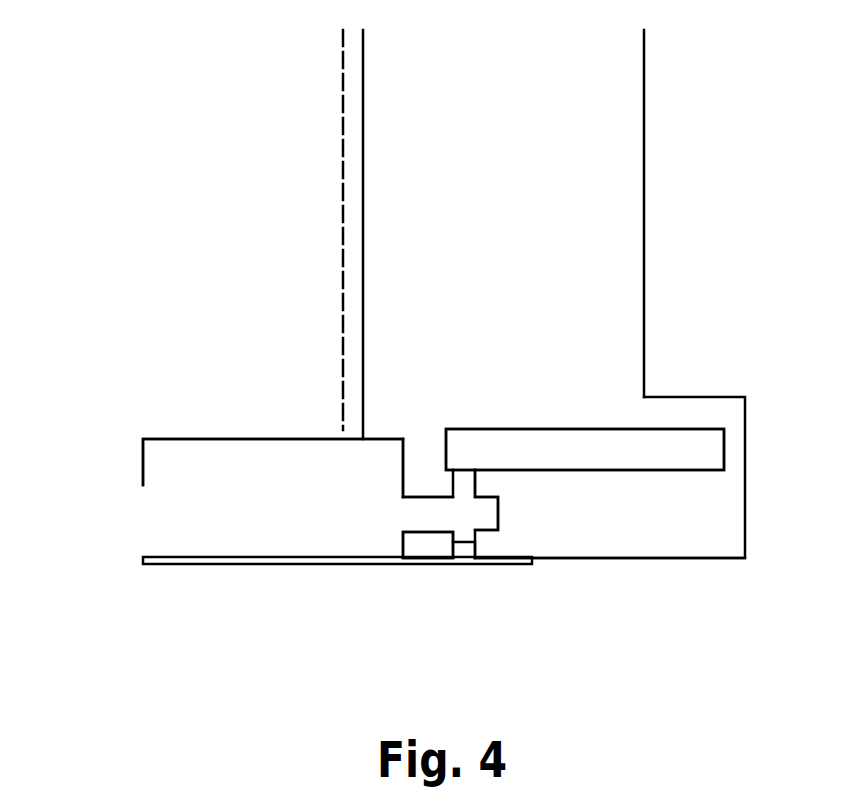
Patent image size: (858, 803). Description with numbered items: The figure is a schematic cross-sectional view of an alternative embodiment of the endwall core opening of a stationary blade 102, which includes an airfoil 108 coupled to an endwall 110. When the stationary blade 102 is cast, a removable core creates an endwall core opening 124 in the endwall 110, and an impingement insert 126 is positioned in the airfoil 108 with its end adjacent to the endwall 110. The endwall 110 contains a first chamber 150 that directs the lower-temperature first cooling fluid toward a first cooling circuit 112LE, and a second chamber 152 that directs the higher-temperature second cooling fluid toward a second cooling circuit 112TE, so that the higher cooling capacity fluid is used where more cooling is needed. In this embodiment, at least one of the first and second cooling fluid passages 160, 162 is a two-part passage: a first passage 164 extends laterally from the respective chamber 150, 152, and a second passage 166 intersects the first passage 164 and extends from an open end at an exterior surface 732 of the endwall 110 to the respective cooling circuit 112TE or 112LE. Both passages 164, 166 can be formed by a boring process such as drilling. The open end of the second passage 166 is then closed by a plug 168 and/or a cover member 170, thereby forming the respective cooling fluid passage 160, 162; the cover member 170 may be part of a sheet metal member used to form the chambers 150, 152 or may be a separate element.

The stationary blade 102 is at (688, 301).
The airfoil 108 is at (567, 177).
The endwall 110 is at (712, 520).
The second cooling circuit 112TE is at (669, 450).
The first cooling circuit 112LE is at (585, 449).
The endwall core opening 124 is at (403, 471).
The impingement insert 126 is at (343, 158).
The first chamber 150 is at (236, 484).
The second chamber 152 is at (273, 462).
The first cooling fluid passage 160 is at (433, 538).
The second cooling fluid passage 162 is at (428, 545).
The first passage 164 is at (425, 518).
The second passage 166 is at (462, 483).
The plug 168 is at (465, 548).
The cover member 170 is at (210, 563).
The exterior surface 732 is at (677, 560).